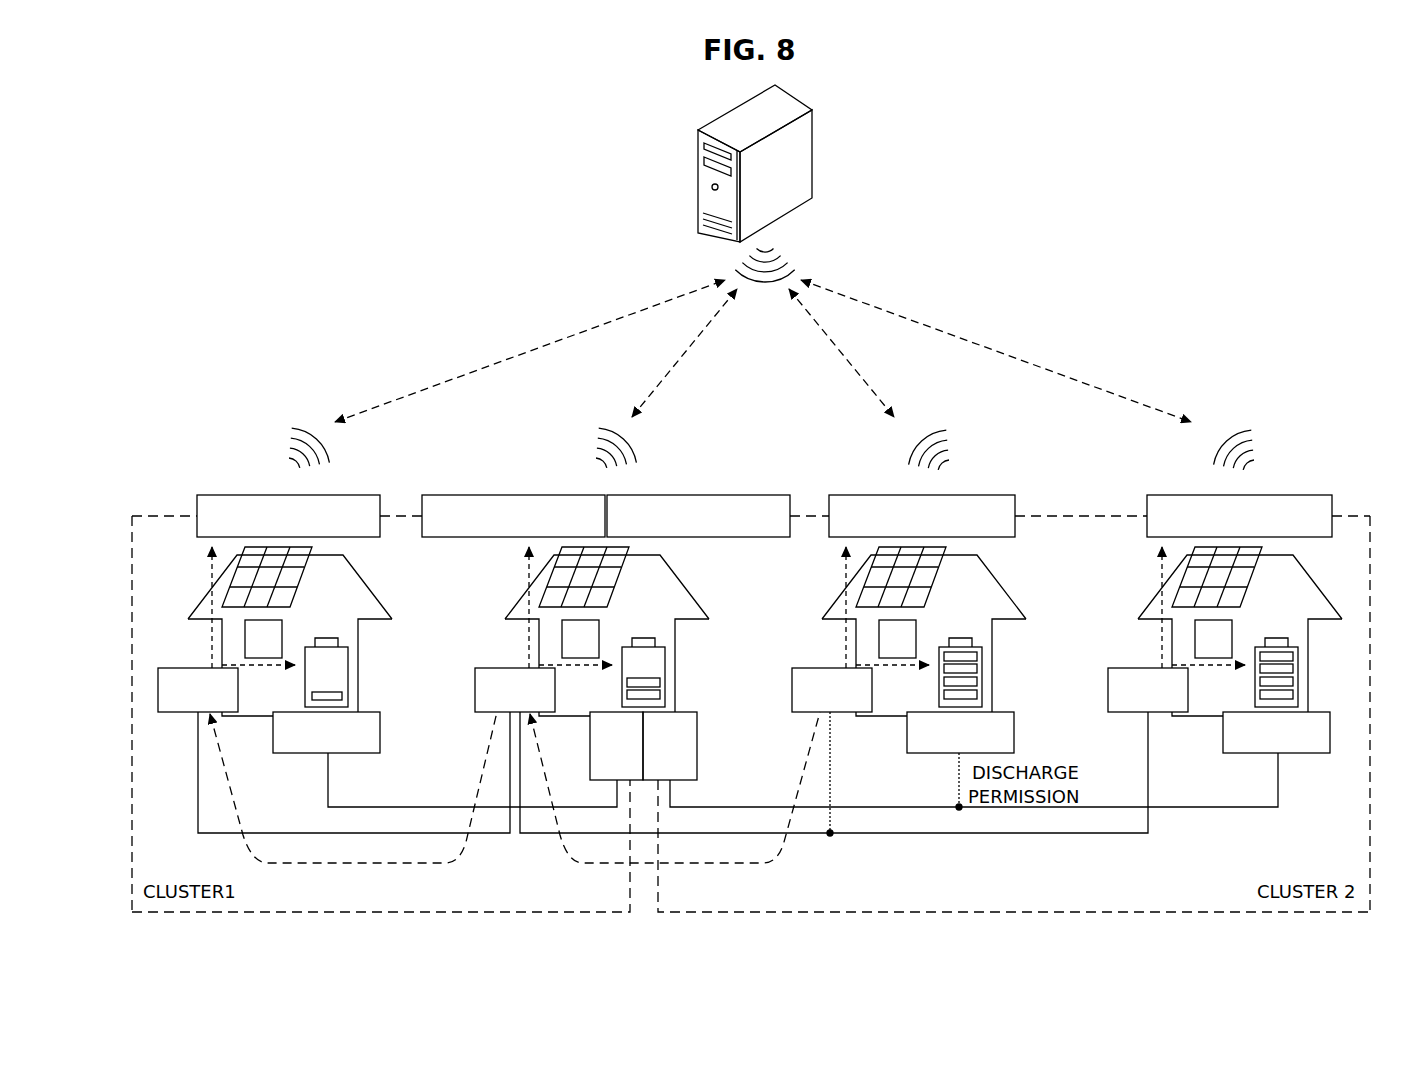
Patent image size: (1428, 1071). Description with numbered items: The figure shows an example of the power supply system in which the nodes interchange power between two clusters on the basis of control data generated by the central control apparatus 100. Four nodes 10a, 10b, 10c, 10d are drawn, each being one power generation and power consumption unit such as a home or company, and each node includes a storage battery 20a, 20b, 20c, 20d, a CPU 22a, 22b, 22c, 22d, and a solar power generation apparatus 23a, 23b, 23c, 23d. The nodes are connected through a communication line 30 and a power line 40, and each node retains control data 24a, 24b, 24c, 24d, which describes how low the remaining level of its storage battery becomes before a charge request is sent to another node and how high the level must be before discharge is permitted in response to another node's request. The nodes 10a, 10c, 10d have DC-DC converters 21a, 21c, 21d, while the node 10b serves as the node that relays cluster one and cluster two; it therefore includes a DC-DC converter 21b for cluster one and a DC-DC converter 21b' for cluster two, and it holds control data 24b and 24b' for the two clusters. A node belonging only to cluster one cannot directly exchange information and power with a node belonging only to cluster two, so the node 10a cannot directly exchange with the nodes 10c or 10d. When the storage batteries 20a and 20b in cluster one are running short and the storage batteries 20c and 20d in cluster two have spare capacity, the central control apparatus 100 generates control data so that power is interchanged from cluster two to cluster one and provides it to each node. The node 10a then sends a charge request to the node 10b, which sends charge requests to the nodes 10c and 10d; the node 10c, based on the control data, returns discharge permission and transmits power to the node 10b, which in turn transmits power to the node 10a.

The central control apparatus 100 is at (814, 141).
The node 10a is at (236, 455).
The node 10b is at (604, 556).
The node 10c is at (910, 556).
The node 10d is at (1203, 556).
The storage battery 20a is at (349, 659).
The storage battery 20b is at (678, 667).
The storage battery 20c is at (993, 668).
The storage battery 20d is at (1310, 668).
The DC-DC converter 21a is at (371, 712).
The DC-DC converter 21b is at (585, 746).
The DC-DC converter 21b' is at (692, 720).
The DC-DC converter 21c is at (977, 707).
The DC-DC converter 21d is at (1294, 707).
The CPU 22a is at (178, 668).
The CPU 22b is at (542, 629).
The CPU 22c is at (858, 629).
The CPU 22d is at (1175, 629).
The solar power generation apparatus 23a is at (312, 572).
The solar power generation apparatus 23b is at (636, 577).
The solar power generation apparatus 23c is at (952, 577).
The solar power generation apparatus 23d is at (1269, 577).
The control data 24a is at (350, 494).
The control data 24b is at (513, 493).
The control data 24b' is at (698, 493).
The control data 24c is at (963, 494).
The control data 24d is at (1280, 494).
The communication line 30 is at (483, 835).
The power line 40 is at (415, 806).